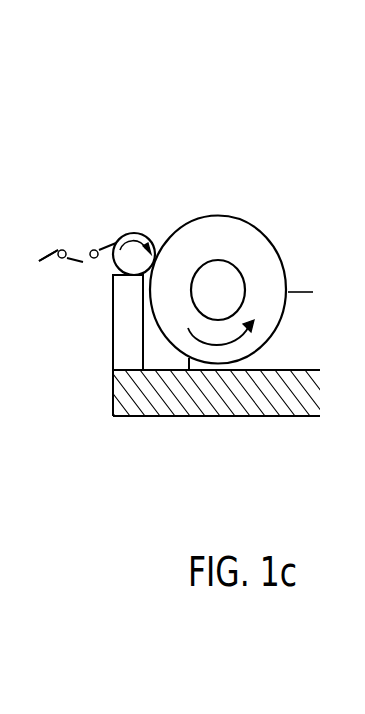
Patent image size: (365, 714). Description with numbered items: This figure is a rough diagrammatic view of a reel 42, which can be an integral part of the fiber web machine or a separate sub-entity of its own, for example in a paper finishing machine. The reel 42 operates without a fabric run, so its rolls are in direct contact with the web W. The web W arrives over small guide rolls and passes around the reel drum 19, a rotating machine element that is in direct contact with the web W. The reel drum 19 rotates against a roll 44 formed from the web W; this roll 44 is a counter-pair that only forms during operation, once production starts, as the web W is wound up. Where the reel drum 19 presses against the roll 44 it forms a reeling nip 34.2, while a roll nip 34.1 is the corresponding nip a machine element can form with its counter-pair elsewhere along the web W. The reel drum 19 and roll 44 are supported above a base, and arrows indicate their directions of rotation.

The reel 42 is at (247, 138).
The roll formed from the web 44 is at (262, 228).
The reel drum 19 is at (125, 236).
The web W is at (80, 251).
The roll nip 34.1 is at (29, 263).
The reeling nip 34.2 is at (150, 270).